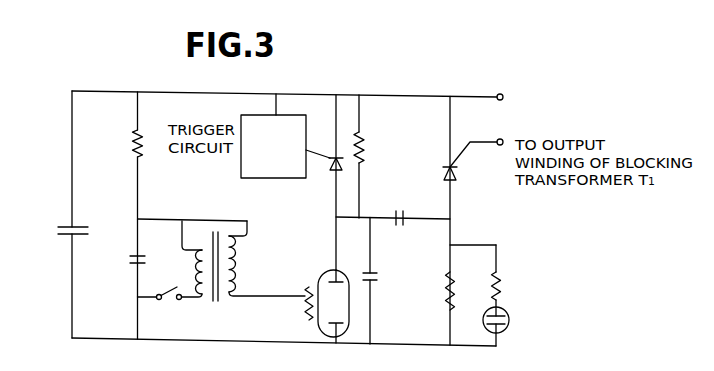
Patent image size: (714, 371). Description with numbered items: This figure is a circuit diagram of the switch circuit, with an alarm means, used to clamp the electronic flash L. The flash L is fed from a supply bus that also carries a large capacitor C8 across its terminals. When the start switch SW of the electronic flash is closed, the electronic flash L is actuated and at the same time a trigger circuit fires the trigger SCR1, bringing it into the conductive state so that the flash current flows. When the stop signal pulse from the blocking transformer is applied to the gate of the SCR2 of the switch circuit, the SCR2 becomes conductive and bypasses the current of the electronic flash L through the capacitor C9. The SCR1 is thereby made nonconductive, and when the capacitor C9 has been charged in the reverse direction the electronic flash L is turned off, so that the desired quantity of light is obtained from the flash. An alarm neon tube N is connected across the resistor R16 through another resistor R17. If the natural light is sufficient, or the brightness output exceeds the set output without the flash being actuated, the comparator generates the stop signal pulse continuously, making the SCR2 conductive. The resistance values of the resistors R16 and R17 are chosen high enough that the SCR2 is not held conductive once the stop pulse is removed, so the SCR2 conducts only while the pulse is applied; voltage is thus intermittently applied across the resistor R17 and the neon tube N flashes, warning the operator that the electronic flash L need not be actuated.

The capacitor C8 is at (64, 232).
The start switch SW is at (160, 289).
The trigger SCR SCR1 is at (324, 182).
The SCR of the switch circuit SCR2 is at (473, 221).
The capacitor C9 is at (401, 228).
The electronic flash L is at (339, 306).
The resistor R16 is at (461, 291).
The resistor R17 is at (507, 275).
The alarm neon tube N is at (502, 323).